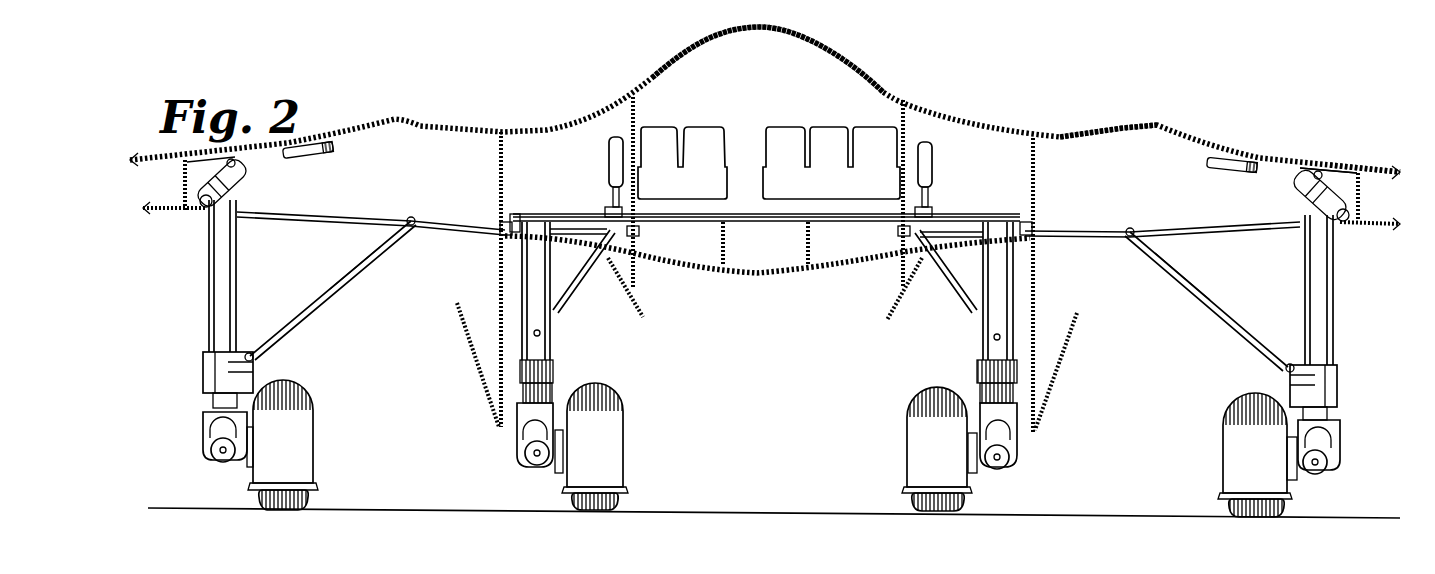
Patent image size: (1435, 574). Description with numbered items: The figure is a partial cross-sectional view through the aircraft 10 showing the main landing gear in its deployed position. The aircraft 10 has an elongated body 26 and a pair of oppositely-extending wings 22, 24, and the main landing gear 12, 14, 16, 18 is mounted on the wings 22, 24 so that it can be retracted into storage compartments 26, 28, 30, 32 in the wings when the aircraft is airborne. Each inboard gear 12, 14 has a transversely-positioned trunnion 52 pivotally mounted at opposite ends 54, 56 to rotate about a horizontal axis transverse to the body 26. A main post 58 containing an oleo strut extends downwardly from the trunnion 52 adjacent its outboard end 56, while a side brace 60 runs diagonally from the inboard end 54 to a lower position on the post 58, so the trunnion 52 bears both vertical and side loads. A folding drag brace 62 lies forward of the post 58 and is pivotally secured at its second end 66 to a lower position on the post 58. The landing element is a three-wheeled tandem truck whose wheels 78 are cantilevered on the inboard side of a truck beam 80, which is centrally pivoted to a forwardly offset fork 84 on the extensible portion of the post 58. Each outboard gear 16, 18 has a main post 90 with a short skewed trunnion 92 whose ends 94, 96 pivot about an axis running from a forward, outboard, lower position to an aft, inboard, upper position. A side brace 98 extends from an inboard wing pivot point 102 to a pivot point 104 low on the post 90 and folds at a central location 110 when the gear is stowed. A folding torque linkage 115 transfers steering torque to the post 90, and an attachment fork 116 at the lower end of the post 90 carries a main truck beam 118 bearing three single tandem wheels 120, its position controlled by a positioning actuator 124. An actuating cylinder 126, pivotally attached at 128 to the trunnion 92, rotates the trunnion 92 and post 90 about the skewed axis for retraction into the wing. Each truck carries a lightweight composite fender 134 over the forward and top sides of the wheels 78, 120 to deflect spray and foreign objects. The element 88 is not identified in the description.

The aircraft 10 is at (893, 80).
The inboard main landing gear 12 is at (608, 361).
The inboard main landing gear 14 is at (890, 348).
The outboard main landing gear 16 is at (193, 314).
The outboard main landing gear 18 is at (1345, 322).
The wing 22 is at (175, 212).
The wing 24 is at (1380, 163).
The elongated body 26 is at (453, 143).
The storage compartment 28 is at (535, 148).
The storage compartment 30 is at (1003, 147).
The storage compartment 32 is at (1118, 142).
The trunnion 52 is at (958, 220).
The inboard end of trunnion 54 is at (640, 232).
The outboard end of trunnion 56 is at (503, 230).
The main post 58 is at (520, 290).
The side brace 60 is at (578, 286).
The folding drag brace 62 is at (525, 248).
The second end of drag brace 66 is at (548, 338).
The wheels 78 is at (617, 500).
The truck beam 80 is at (537, 460).
The fork 84 is at (517, 437).
The actuator 88 is at (610, 160).
The main post 90 is at (230, 270).
The skewed trunnion 92 is at (245, 187).
The trunnion end 94 is at (199, 213).
The trunnion end 96 is at (1303, 168).
The side brace 98 is at (333, 298).
The pivot point 102 is at (410, 218).
The pivot point 104 is at (255, 345).
The central folding location 110 is at (332, 290).
The folding torque linkage 115 is at (203, 397).
The attachment fork 116 is at (210, 427).
The main truck beam 118 is at (217, 454).
The wheels 120 is at (307, 493).
The positioning actuator 124 is at (217, 437).
The actuating cylinder 126 is at (312, 162).
The pivotal attachment 128 is at (1320, 172).
The fender 134 is at (307, 400).